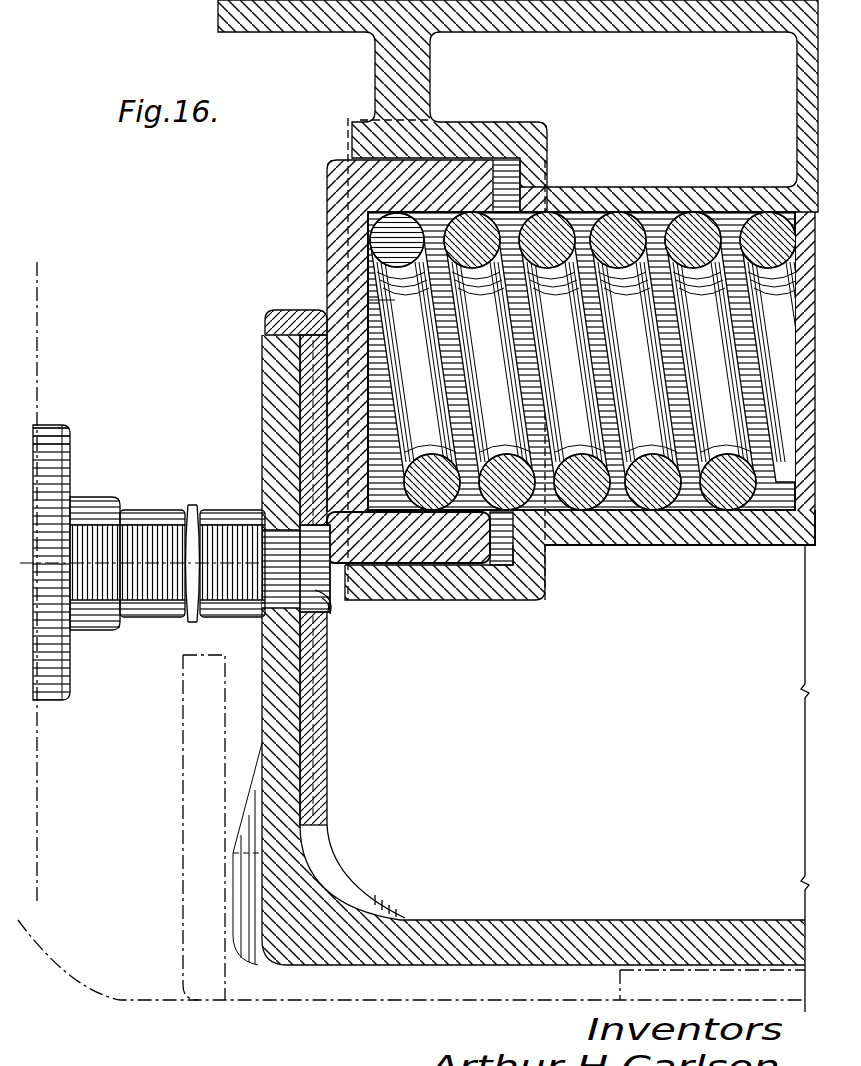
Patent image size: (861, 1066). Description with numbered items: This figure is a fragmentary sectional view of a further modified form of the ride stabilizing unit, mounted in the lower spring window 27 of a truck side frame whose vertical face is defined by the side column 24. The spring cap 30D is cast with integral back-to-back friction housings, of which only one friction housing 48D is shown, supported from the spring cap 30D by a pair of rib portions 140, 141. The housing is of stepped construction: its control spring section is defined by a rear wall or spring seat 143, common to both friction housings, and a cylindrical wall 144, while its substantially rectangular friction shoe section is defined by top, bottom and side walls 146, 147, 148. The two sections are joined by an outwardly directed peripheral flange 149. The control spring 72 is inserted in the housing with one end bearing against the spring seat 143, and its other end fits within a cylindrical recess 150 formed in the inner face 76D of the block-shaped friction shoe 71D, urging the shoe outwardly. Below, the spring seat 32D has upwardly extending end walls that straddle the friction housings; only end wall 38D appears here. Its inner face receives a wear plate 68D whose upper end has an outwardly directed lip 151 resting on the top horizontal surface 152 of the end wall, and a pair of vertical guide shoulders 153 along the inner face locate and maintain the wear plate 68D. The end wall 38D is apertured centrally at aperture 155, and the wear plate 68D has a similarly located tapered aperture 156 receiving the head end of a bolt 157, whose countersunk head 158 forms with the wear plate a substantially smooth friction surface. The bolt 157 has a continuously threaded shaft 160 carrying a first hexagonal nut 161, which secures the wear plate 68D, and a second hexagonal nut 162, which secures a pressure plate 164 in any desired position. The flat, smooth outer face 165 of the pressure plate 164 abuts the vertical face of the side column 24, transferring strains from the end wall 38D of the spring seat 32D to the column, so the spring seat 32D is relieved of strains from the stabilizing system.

The rib portion 140 is at (410, 81).
The spring cap 30D is at (647, 22).
The top wall 146 is at (470, 135).
The peripheral flange 149 is at (535, 166).
The rib portion 141 is at (803, 103).
The side wall 148 is at (430, 212).
The friction shoe 71D is at (330, 237).
The inner face 76D is at (372, 300).
The lip 151 is at (265, 325).
The top horizontal surface 152 is at (300, 357).
The side column 24 is at (42, 363).
The vertical guide shoulder 153 is at (293, 418).
The pressure plate 164 is at (45, 433).
The second hexagonal nut 162 is at (128, 510).
The first hexagonal nut 161 is at (213, 517).
The aperture 155 is at (280, 517).
The control spring 72 is at (599, 361).
The rear wall or spring seat 143 is at (806, 440).
The outer face 165 is at (35, 583).
The threaded shaft 160 is at (177, 585).
The bolt 157 is at (265, 615).
The head 158 is at (325, 615).
The aperture 156 is at (318, 645).
The recess 150 is at (393, 497).
The bottom wall 147 is at (507, 603).
The cylindrical wall 144 is at (613, 530).
The friction housing 48D is at (705, 556).
The wear plate 68D is at (325, 693).
The end wall 38D is at (283, 774).
The spring seat 32D is at (537, 940).
The spring window 27 is at (109, 920).